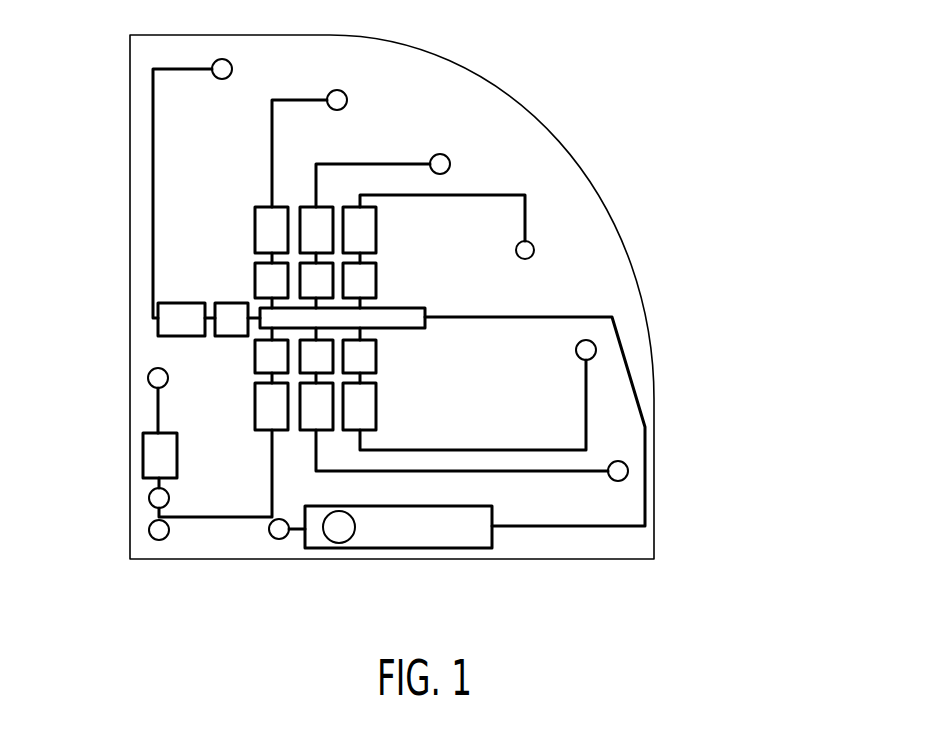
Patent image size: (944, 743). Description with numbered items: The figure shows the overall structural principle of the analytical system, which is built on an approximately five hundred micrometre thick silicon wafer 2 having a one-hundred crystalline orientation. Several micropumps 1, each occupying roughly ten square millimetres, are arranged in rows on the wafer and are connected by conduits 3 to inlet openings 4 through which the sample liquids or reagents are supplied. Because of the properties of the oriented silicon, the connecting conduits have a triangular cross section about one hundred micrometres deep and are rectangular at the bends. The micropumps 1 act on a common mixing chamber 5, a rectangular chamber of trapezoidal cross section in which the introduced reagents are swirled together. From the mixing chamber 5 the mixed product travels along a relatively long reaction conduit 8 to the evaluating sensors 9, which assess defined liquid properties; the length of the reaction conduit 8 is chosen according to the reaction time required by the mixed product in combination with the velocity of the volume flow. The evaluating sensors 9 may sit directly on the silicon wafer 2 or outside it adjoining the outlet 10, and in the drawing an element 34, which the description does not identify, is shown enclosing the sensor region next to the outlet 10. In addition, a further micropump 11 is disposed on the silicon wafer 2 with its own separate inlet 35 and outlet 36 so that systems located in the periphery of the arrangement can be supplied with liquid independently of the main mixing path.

The micropump 1 is at (365, 242).
The silicon wafer 2 is at (448, 92).
The conduit 3 is at (438, 193).
The inlet opening 4 is at (535, 250).
The mixing chamber 5 is at (392, 320).
The reaction conduit 8 is at (632, 380).
The evaluating sensor 9 is at (339, 527).
The outlet 10 is at (277, 535).
The further micropump 11 is at (157, 455).
The module housing 34 is at (475, 537).
The separate inlet 35 is at (153, 510).
The outlet 36 is at (156, 374).